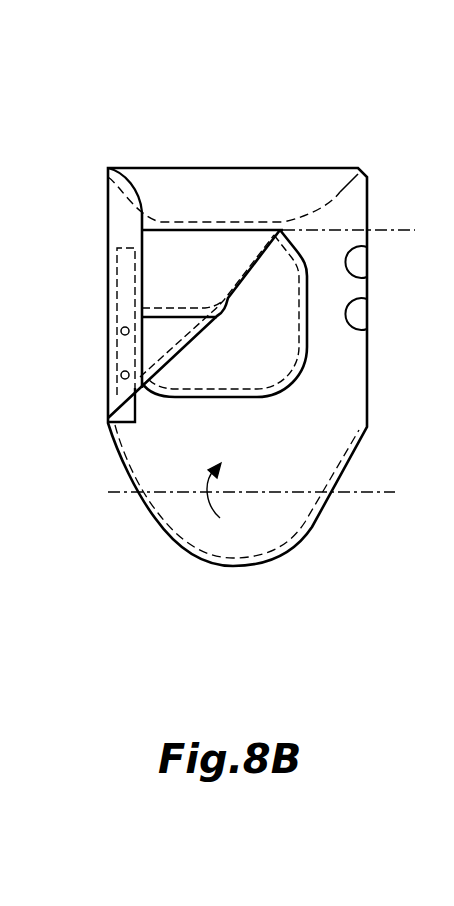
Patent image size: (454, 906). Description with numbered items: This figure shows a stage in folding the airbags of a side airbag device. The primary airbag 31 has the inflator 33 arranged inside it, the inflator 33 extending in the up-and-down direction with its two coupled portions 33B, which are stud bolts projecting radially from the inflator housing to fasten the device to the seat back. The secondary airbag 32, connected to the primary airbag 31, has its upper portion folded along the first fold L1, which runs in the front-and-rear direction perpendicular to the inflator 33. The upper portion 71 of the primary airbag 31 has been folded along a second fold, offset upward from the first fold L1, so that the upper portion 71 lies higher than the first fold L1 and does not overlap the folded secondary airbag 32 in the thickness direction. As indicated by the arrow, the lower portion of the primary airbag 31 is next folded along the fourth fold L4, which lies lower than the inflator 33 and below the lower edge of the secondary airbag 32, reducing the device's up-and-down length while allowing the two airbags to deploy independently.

The primary airbag 31 is at (263, 570).
The secondary airbag 32 is at (216, 406).
The inflator 33 is at (122, 434).
The coupled portion 33B is at (121, 331).
The upper portion of the primary airbag 71 is at (338, 195).
The first fold L1 is at (295, 234).
The fourth fold L4 is at (268, 494).